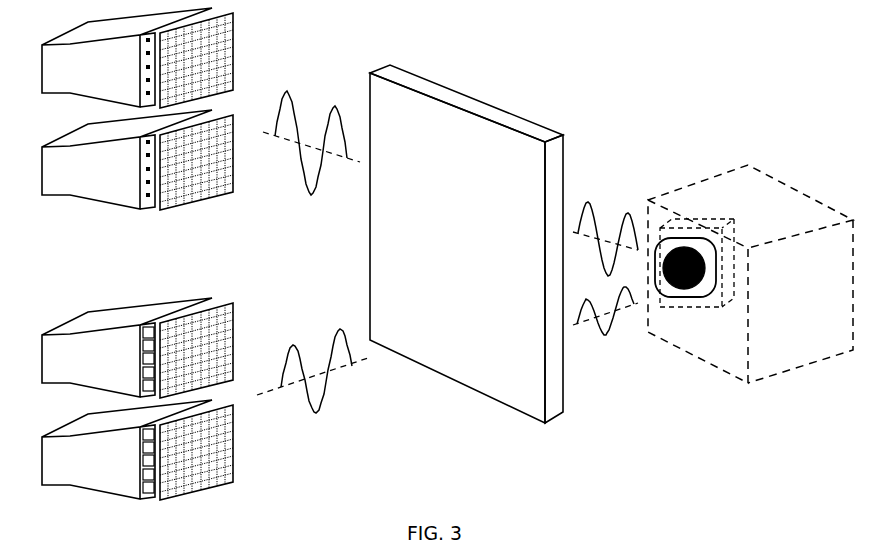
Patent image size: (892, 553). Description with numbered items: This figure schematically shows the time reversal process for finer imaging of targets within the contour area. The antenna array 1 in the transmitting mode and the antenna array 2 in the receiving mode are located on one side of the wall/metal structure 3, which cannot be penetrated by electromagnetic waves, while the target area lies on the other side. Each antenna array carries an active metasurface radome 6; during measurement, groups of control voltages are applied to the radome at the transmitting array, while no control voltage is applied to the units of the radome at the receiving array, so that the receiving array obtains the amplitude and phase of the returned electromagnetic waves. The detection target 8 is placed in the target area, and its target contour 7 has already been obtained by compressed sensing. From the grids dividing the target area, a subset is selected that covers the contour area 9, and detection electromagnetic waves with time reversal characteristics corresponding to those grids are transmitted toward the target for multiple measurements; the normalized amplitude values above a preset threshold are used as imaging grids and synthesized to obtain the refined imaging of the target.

The antenna array in transmitting mode 1 is at (97, 137).
The antenna array in receiving mode 2 is at (92, 428).
The wall/metal structure 3 is at (423, 250).
The active metasurface radome 6 is at (233, 150).
The target contour obtained by compressed sensing 7 is at (707, 240).
The detection target 8 is at (660, 273).
The contour area covered by p grids 9 is at (695, 293).